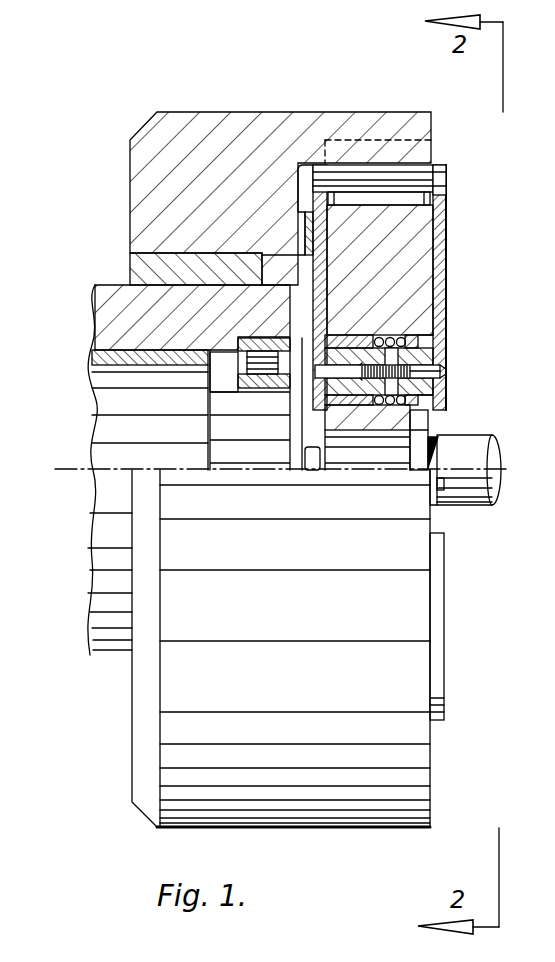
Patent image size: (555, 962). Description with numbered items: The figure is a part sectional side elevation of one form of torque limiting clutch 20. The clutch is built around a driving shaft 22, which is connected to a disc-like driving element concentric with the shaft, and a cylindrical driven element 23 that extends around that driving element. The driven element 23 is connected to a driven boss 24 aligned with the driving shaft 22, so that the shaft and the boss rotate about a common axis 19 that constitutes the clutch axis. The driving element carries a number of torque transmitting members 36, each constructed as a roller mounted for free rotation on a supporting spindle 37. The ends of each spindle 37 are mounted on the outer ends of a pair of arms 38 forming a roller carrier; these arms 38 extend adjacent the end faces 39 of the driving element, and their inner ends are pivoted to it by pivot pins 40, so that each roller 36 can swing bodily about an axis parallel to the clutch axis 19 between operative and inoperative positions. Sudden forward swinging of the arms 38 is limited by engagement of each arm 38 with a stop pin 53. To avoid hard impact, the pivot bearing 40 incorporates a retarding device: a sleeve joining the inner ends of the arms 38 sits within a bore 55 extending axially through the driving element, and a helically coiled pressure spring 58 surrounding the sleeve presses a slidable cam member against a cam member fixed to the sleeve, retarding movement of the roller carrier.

The common axis 19 is at (55, 468).
The torque limiting clutch 20 is at (462, 244).
The driving shaft 22 is at (463, 440).
The driven element 23 is at (358, 123).
The driven boss 24 is at (110, 290).
The torque transmitting member 36 is at (420, 176).
The supporting spindle 37 is at (444, 184).
The arm 38 is at (322, 294).
The end face 39 is at (322, 322).
The pivot pin 40 is at (443, 369).
The stop pin 53 is at (441, 485).
The bore 55 is at (357, 396).
The helically coiled pressure spring 58 is at (397, 340).